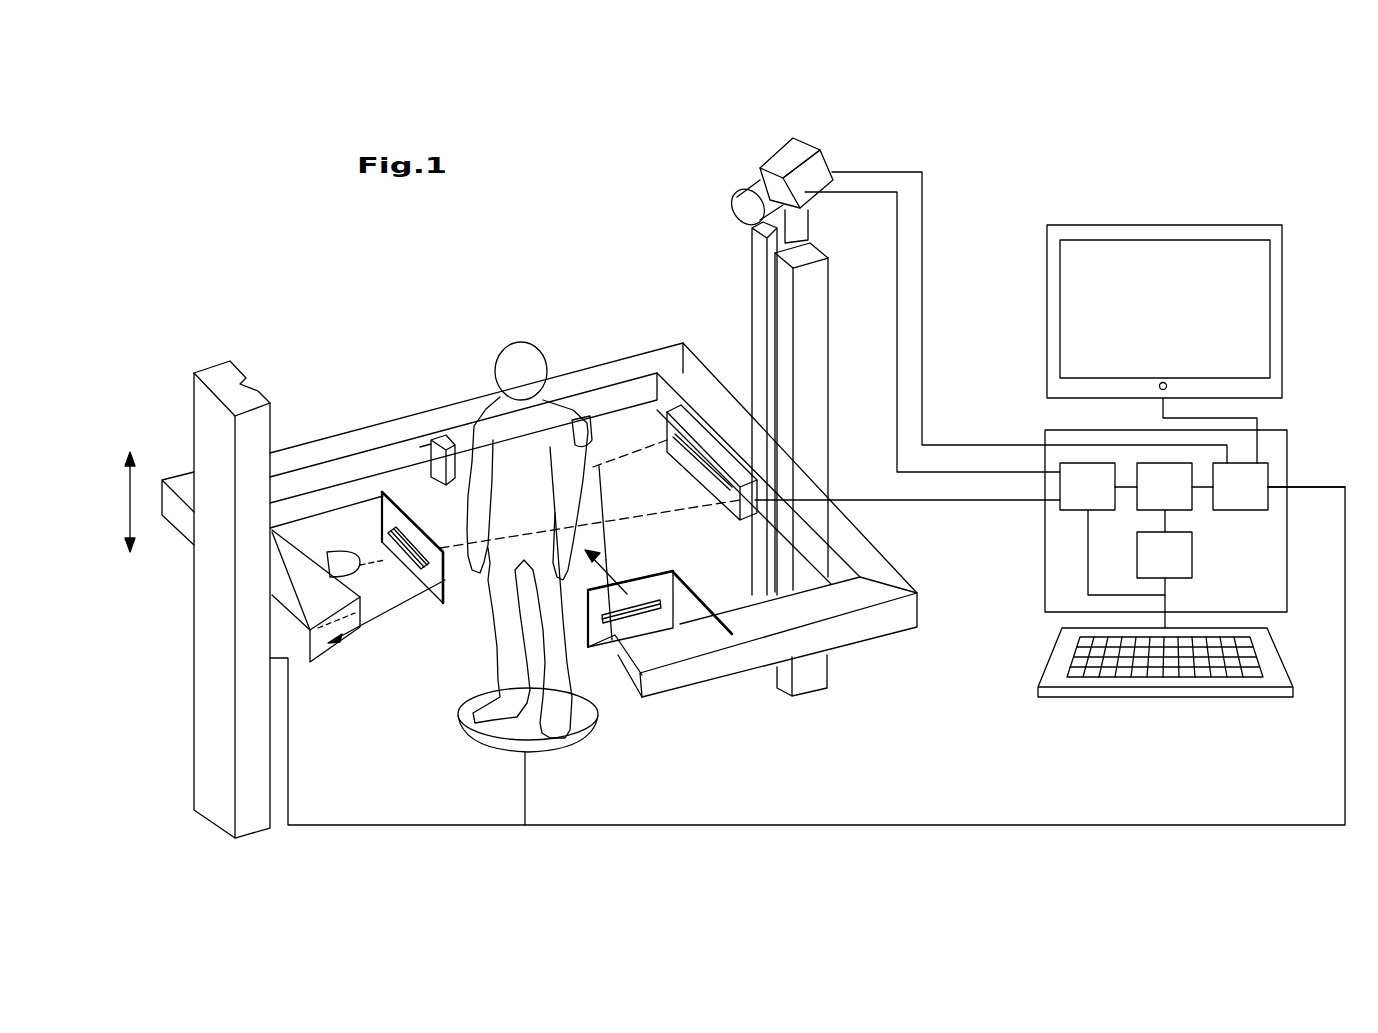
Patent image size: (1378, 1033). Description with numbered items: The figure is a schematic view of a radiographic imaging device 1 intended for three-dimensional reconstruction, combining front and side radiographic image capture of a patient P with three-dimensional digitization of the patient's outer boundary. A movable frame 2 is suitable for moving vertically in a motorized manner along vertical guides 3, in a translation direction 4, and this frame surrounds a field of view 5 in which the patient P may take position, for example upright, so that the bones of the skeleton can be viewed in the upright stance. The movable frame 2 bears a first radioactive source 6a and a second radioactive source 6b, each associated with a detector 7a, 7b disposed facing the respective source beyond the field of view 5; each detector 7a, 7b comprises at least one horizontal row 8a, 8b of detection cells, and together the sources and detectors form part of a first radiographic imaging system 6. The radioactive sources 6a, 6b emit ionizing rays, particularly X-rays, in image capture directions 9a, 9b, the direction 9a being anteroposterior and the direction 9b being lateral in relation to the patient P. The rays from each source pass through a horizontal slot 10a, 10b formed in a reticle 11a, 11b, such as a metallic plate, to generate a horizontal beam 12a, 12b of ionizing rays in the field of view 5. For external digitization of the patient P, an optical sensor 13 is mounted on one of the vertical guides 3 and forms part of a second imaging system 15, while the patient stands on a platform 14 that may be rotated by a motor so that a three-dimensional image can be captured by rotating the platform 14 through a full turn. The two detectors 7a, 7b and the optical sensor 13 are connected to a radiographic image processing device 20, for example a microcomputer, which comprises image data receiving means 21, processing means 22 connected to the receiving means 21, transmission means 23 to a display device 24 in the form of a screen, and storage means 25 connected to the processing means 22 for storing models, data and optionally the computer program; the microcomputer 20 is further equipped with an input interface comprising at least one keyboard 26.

The radiographic imaging device 1 is at (290, 318).
The movable frame 2 is at (372, 416).
The vertical guides 3 is at (203, 413).
The translation direction 4 is at (130, 492).
The field of view 5 is at (420, 712).
The first radiographic imaging system 6 is at (290, 650).
The first radioactive source 6a is at (356, 636).
The second radioactive source 6b is at (637, 627).
The detector 7a is at (680, 343).
The detector 7b is at (440, 437).
The horizontal row of detection cells 8a is at (702, 442).
The horizontal row of detection cells 8b is at (425, 445).
The image capture direction 9a is at (440, 556).
The image capture direction 9b is at (602, 527).
The horizontal slot 10a is at (395, 580).
The horizontal slot 10b is at (652, 612).
The reticle 11a is at (437, 604).
The reticle 11b is at (577, 643).
The horizontal beam 12a is at (370, 548).
The horizontal beam 12b is at (632, 585).
The optical sensor 13 is at (805, 137).
The platform 14 is at (465, 740).
The second imaging system 15 is at (731, 134).
The radiographic image processing device 20 is at (1290, 450).
The image data receiving means 21 is at (1112, 529).
The processing means 22 is at (1175, 497).
The transmission means 23 is at (1279, 486).
The display device 24 is at (1287, 307).
The storage means 25 is at (1164, 580).
The keyboard 26 is at (1210, 700).
The patient P is at (522, 345).